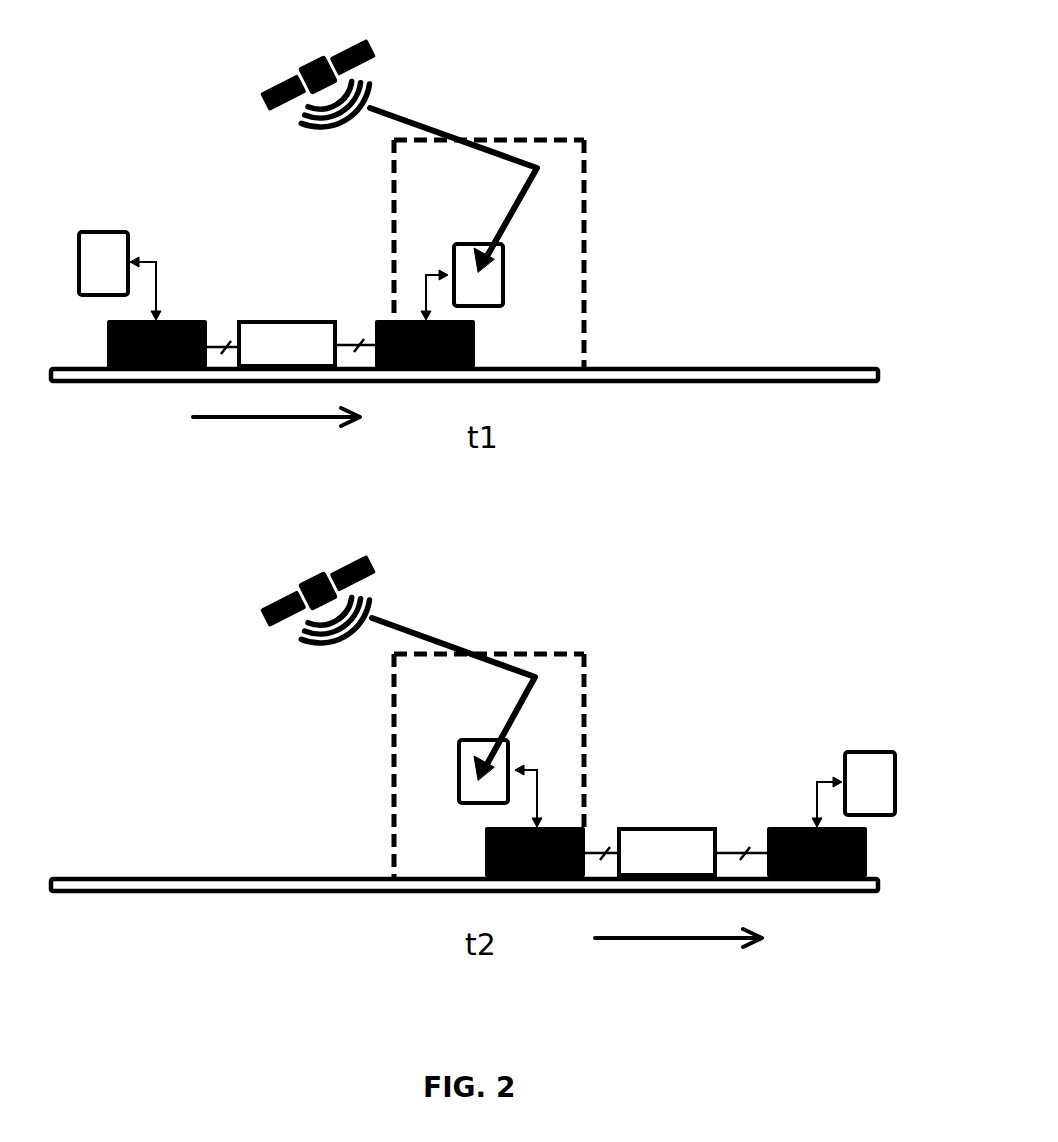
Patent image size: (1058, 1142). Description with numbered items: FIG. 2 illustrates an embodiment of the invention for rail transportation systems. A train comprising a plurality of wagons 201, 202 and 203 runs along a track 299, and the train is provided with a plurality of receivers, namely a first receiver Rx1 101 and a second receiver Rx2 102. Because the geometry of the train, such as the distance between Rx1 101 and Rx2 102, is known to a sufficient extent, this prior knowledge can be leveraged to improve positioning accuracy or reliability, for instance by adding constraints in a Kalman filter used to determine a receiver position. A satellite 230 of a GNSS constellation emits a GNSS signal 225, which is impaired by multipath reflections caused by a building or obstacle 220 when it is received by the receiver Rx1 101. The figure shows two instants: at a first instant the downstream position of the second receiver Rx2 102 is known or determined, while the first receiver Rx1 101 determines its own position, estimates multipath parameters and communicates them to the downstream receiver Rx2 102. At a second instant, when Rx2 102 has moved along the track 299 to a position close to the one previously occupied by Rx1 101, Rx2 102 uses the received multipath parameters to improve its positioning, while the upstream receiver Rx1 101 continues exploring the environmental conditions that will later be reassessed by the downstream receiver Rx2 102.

The first receiver Rx1 101 is at (507, 262).
The second receiver Rx2 102 is at (97, 227).
The wagon 201 is at (478, 357).
The wagon 202 is at (183, 310).
The wagon 203 is at (288, 310).
The building or obstacle 220 is at (553, 132).
The GNSS signal 225 is at (430, 125).
The satellite 230 is at (383, 27).
The track 299 is at (777, 365).